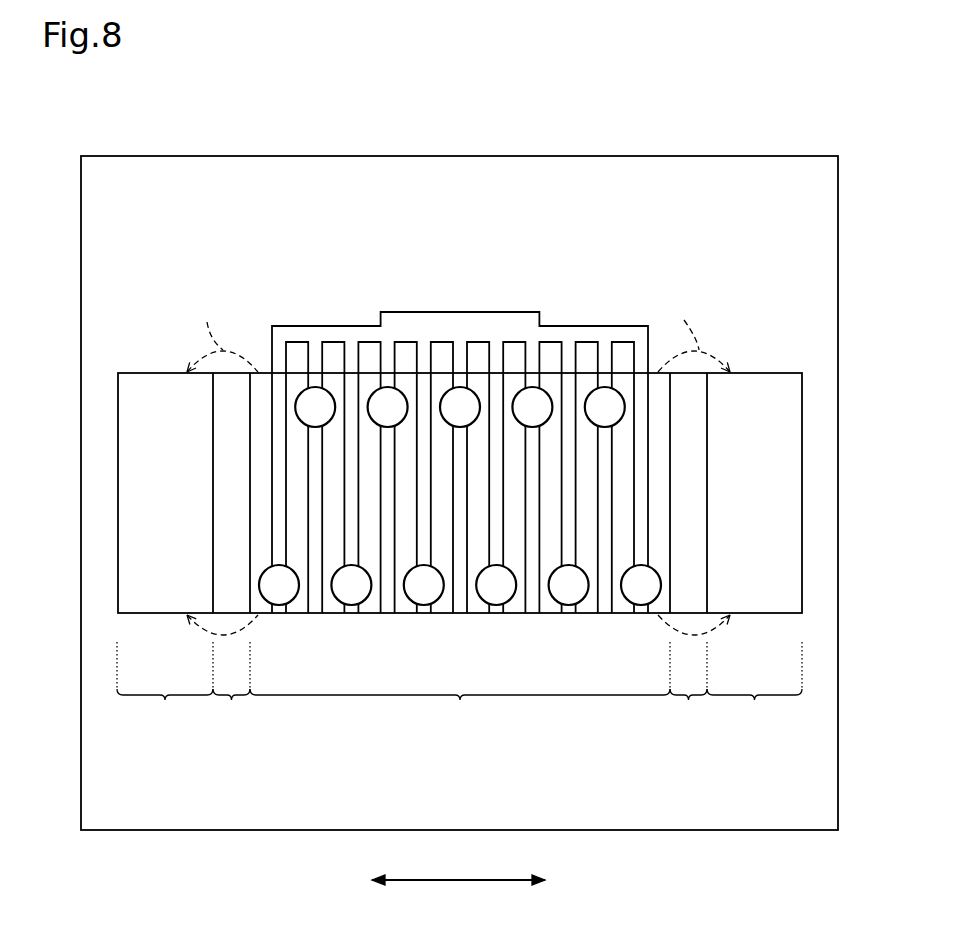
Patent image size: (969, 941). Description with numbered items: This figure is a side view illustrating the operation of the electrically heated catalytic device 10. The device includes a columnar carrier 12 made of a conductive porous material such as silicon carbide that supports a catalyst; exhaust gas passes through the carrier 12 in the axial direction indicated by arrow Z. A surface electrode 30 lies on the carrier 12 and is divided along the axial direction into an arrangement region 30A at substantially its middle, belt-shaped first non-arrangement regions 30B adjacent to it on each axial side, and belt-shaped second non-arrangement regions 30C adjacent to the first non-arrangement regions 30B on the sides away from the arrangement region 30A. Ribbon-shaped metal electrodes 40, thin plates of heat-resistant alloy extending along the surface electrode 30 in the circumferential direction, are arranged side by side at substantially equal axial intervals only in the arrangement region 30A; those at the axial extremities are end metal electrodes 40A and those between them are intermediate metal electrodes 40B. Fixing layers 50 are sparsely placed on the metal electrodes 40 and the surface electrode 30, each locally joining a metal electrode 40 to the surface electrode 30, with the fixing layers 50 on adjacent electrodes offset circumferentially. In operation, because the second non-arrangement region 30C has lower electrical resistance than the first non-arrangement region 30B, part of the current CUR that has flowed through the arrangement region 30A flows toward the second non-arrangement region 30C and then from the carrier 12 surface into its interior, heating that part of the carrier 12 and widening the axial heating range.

The electrically heated catalytic device 10 is at (229, 140).
The carrier 12 is at (820, 218).
The surface electrode 30 is at (785, 420).
The arrangement region 30A is at (460, 726).
The first non-arrangement region 30B is at (459, 703).
The second non-arrangement region 30C is at (459, 703).
The metal electrode 40 is at (464, 494).
The end metal electrode 40A is at (755, 513).
The intermediate metal electrode 40B is at (352, 615).
The fixing layer 50 is at (645, 583).
The current CUR is at (457, 462).
The arrow Z is at (458, 865).